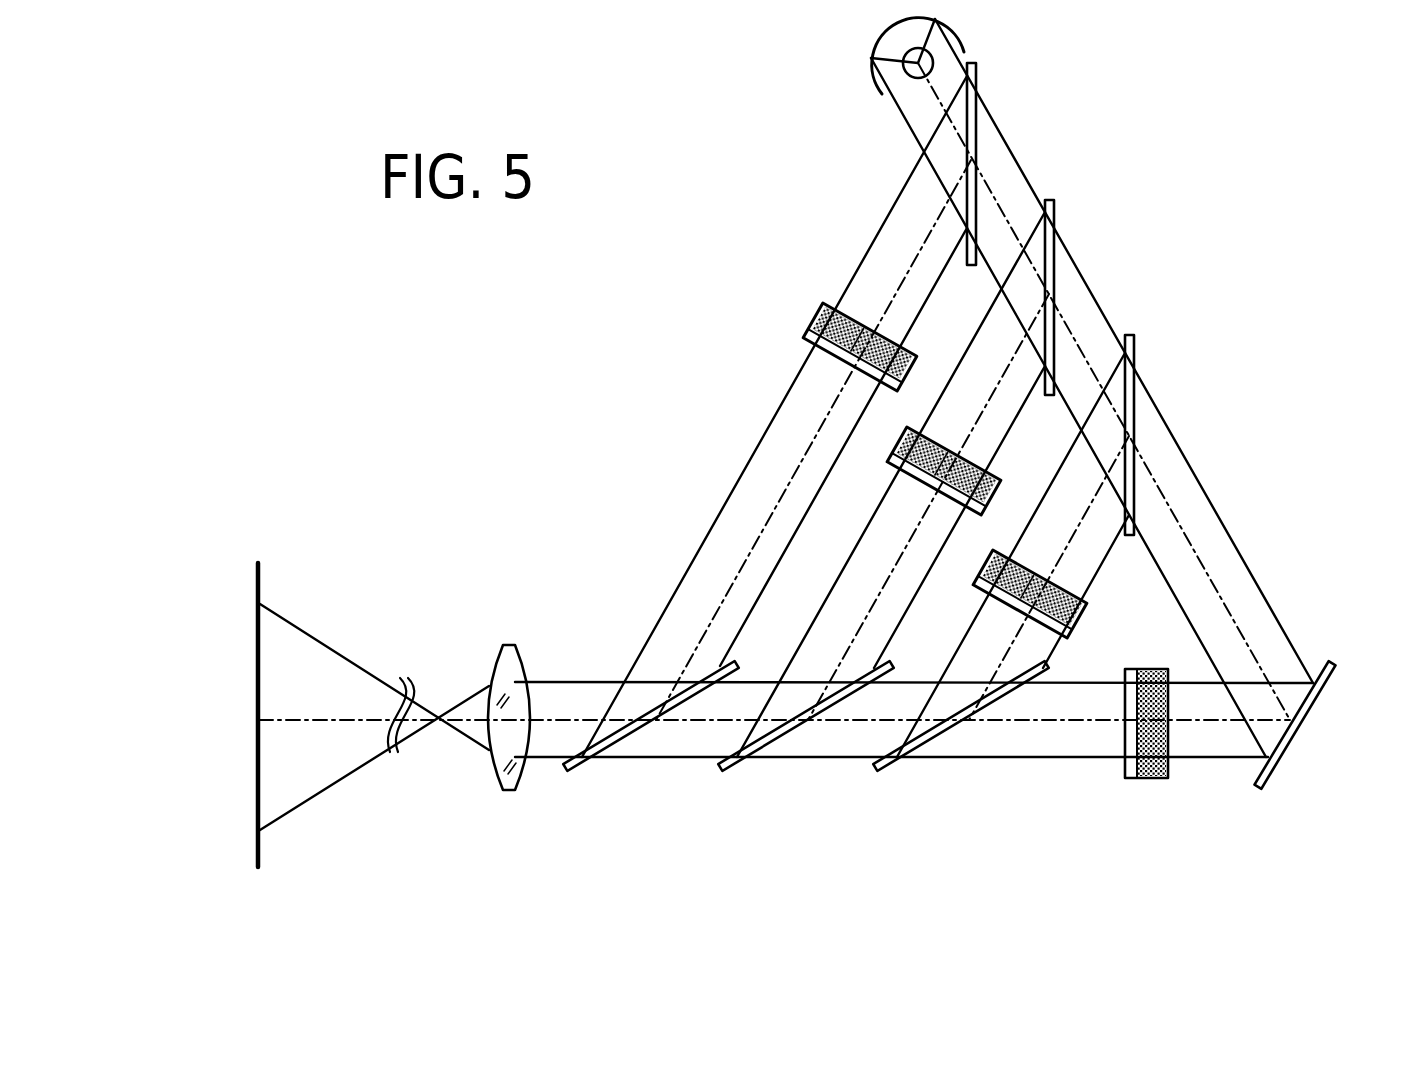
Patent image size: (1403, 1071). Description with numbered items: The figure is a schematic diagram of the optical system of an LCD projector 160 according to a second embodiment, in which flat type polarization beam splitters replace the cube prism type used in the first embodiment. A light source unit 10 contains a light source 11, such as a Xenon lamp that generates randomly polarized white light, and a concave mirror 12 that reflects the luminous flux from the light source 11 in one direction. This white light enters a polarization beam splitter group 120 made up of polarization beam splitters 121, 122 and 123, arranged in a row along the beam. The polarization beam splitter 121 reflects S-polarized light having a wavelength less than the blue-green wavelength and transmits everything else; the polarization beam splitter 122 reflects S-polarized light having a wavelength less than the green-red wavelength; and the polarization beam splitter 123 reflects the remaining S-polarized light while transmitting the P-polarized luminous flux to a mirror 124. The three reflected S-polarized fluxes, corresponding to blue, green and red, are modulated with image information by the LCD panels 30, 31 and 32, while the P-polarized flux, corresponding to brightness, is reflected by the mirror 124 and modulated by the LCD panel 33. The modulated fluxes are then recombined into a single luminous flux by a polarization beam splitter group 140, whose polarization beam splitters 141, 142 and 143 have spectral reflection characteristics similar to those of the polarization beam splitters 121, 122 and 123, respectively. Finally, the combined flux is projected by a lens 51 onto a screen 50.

The light source unit 10 is at (868, 92).
The light source 11 is at (917, 80).
The concave mirror 12 is at (877, 97).
The LCD panel 30 is at (905, 353).
The LCD panel 31 is at (994, 475).
The LCD panel 32 is at (1080, 596).
The LCD panel 33 is at (1150, 780).
The screen 50 is at (260, 572).
The lens 51 is at (497, 663).
The polarization beam splitter group 120 is at (1085, 278).
The polarization beam splitter 121 is at (977, 66).
The polarization beam splitter 122 is at (1054, 206).
The polarization beam splitter 123 is at (1161, 424).
The mirror 124 is at (1318, 703).
The polarization beam splitter group 140 is at (806, 772).
The polarization beam splitter 141 is at (585, 772).
The polarization beam splitter 142 is at (732, 772).
The polarization beam splitter 143 is at (961, 739).
The LCD projector 160 is at (690, 390).